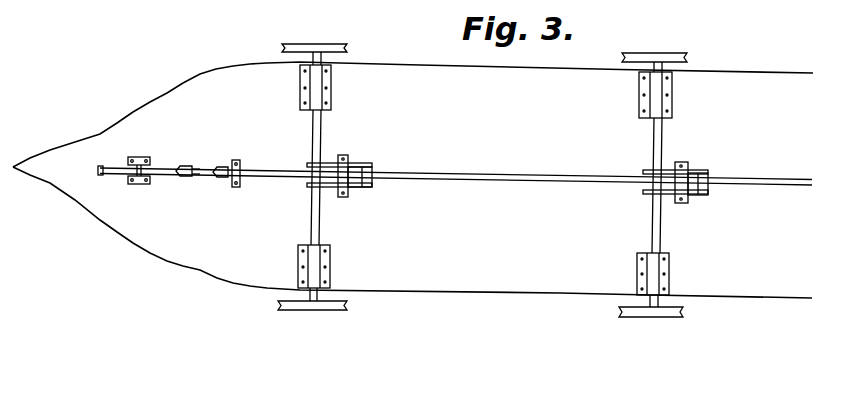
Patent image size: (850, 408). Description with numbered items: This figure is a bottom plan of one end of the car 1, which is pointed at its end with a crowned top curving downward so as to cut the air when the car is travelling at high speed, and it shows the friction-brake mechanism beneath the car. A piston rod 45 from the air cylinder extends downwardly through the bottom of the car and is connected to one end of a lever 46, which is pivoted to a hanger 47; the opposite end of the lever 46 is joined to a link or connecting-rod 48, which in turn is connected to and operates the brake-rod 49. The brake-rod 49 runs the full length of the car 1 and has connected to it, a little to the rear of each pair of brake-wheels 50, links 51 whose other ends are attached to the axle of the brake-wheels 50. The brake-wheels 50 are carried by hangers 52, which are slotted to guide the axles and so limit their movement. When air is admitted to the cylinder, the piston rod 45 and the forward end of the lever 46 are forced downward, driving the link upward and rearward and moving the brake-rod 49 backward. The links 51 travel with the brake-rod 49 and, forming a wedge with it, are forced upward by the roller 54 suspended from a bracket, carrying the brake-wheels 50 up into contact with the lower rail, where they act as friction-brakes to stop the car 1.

The car 1 is at (413, 180).
The piston rod 45 is at (102, 168).
The lever 46 is at (167, 173).
The hanger 47 is at (143, 157).
The link or connecting-rod 48 is at (205, 170).
The brake-rod 49 is at (456, 164).
The brake-wheels 50 is at (491, 37).
The links 51 is at (307, 167).
The hangers 52 is at (514, 180).
The roller 54 is at (343, 173).